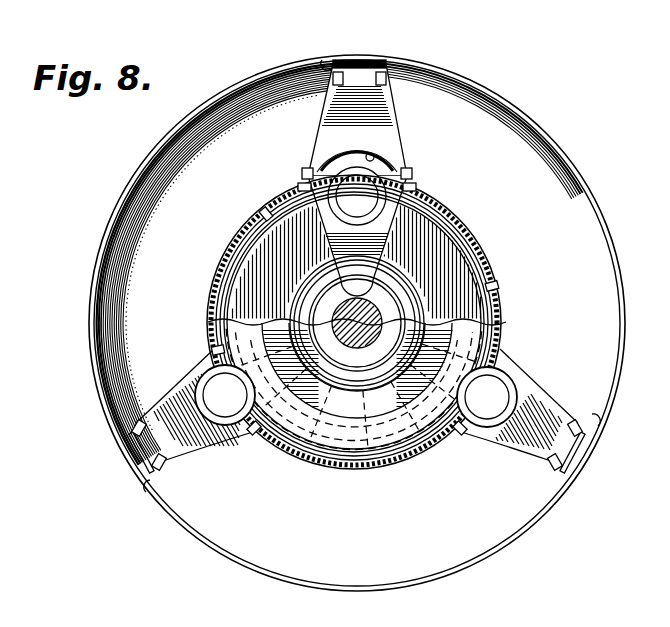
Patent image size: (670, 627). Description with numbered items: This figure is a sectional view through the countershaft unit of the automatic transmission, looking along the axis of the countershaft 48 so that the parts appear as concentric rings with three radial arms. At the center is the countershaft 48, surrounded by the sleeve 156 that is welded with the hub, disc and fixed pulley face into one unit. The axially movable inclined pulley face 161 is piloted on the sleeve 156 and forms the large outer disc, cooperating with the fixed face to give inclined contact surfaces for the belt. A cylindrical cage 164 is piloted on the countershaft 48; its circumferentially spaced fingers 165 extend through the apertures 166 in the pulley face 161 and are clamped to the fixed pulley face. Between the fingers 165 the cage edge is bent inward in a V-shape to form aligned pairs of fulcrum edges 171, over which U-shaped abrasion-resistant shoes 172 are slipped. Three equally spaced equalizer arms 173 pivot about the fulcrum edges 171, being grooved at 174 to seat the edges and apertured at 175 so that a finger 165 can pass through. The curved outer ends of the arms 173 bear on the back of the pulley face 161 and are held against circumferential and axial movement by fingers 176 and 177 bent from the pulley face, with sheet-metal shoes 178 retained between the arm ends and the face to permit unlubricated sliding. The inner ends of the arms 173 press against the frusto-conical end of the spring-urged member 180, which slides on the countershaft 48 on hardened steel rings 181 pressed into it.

The countershaft 48 is at (365, 345).
The sleeve 156 is at (410, 296).
The axially movable inclined pulley face 161 is at (516, 128).
The cylindrical cage 164 is at (455, 216).
The fingers 165 is at (344, 174).
The apertures 166 is at (236, 260).
The fulcrum edges 171 is at (268, 214).
The U-shaped shoes 172 is at (300, 186).
The equalizer arms 173 is at (344, 106).
The bearing grooves 174 is at (306, 176).
The apertures in equalizer arms 175 is at (372, 165).
The fingers of pulley face 176 is at (331, 62).
The fingers of pulley face 177 is at (392, 72).
The shoes 178 is at (360, 62).
The member 180 is at (320, 308).
The hardened steel rings 181 is at (318, 266).